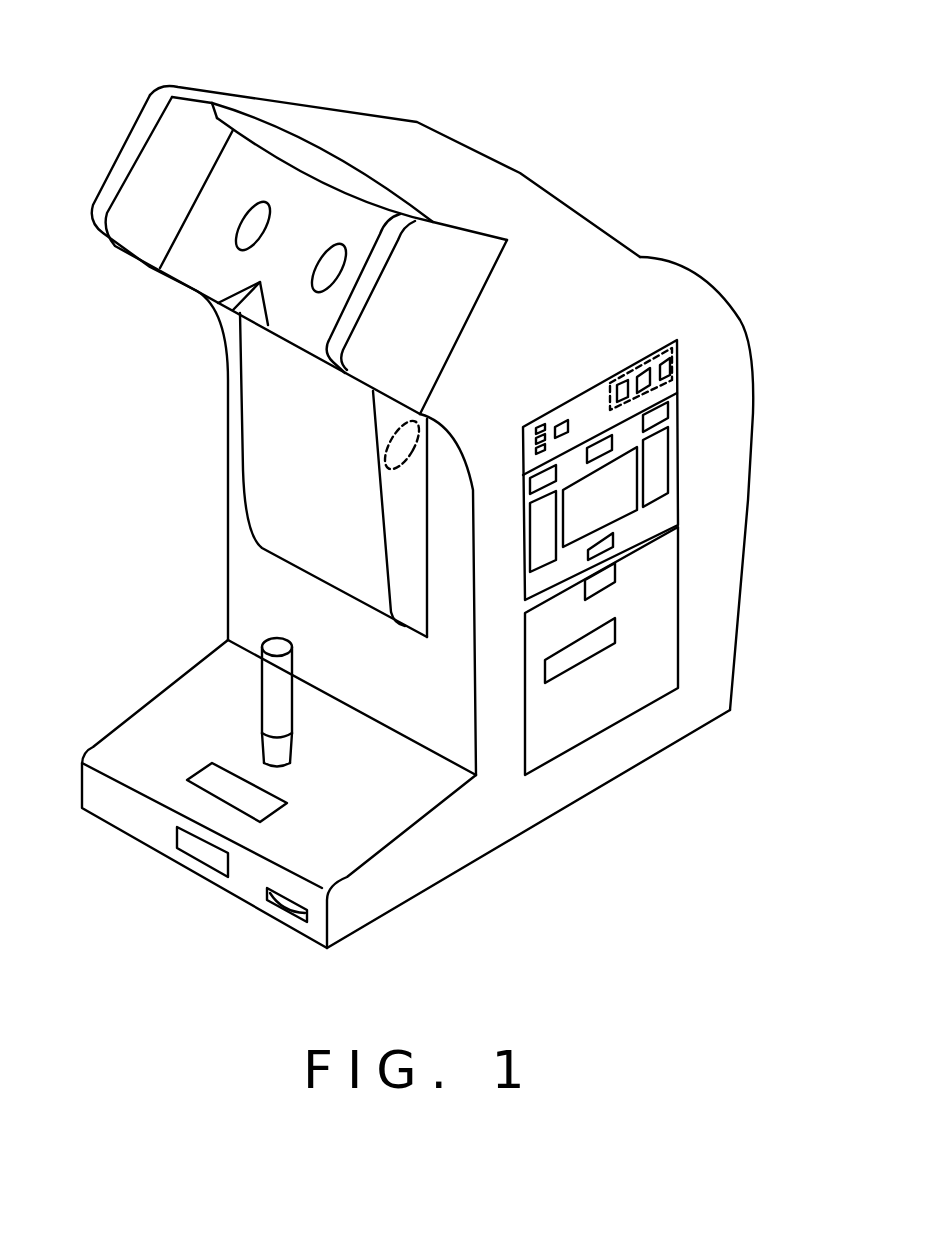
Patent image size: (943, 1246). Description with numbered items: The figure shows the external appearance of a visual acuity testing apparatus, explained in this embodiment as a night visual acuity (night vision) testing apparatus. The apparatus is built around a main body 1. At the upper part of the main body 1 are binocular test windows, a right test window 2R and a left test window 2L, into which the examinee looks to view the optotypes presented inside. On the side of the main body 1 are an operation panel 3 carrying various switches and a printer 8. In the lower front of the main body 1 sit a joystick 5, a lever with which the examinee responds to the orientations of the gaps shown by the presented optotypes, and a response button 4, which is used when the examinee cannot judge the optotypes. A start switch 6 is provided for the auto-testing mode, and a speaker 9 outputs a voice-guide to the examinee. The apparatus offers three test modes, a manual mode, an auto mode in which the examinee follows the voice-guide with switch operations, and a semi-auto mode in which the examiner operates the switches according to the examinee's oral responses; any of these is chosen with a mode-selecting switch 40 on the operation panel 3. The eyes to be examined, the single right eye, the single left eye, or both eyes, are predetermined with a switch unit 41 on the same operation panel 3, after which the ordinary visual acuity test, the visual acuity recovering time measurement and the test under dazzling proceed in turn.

The main body 1 is at (363, 130).
The left binocular test window 2L is at (237, 220).
The right binocular test window 2R is at (347, 243).
The operation panel 3 is at (680, 447).
The response button 4 is at (207, 773).
The joystick 5 is at (277, 670).
The start switch 6 is at (187, 843).
The printer 8 is at (605, 637).
The speaker 9 is at (397, 448).
The mode-selecting switch 40 is at (562, 420).
The switch unit 41 is at (640, 360).